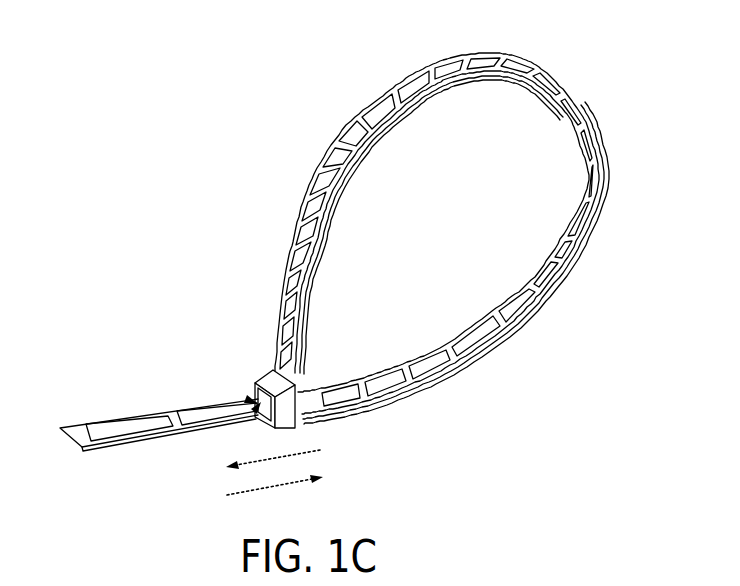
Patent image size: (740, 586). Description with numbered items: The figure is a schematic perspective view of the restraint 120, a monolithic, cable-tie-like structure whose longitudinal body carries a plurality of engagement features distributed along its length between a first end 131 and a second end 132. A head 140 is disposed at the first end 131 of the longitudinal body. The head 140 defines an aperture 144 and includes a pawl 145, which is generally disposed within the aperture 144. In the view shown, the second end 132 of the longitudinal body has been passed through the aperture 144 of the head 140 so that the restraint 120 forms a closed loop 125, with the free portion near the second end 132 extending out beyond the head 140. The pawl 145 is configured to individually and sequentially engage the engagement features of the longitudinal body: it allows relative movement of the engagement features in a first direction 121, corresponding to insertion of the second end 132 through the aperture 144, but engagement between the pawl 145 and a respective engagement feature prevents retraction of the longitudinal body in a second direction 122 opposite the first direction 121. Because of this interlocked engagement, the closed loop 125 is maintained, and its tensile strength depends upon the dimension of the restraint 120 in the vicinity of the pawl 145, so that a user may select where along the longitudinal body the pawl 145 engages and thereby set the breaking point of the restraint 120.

The restraint 120 is at (236, 32).
The closed loop 125 is at (553, 353).
The first end 131 is at (295, 427).
The second end 132 is at (73, 448).
The head 140 is at (267, 380).
The aperture 144 is at (248, 400).
The pawl 145 is at (252, 412).
The first direction 121 is at (302, 451).
The second direction 122 is at (258, 493).